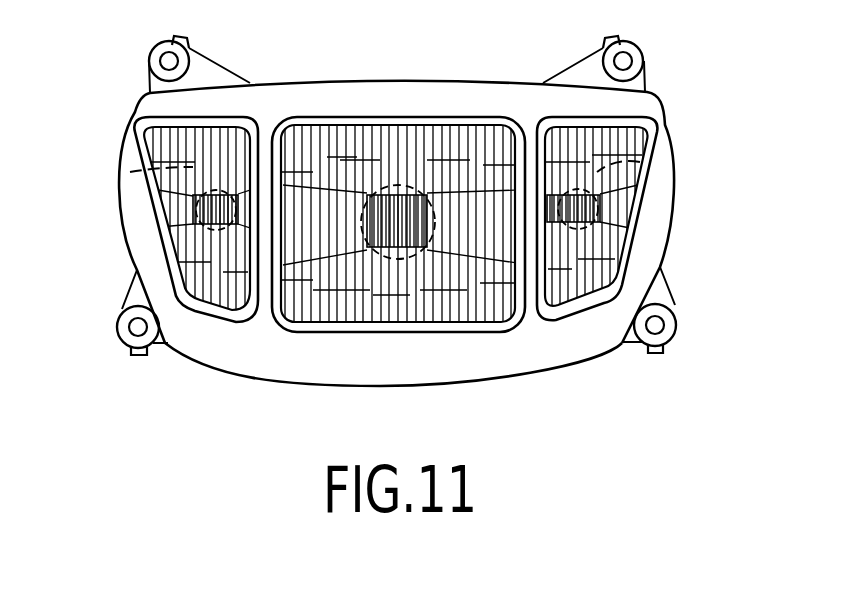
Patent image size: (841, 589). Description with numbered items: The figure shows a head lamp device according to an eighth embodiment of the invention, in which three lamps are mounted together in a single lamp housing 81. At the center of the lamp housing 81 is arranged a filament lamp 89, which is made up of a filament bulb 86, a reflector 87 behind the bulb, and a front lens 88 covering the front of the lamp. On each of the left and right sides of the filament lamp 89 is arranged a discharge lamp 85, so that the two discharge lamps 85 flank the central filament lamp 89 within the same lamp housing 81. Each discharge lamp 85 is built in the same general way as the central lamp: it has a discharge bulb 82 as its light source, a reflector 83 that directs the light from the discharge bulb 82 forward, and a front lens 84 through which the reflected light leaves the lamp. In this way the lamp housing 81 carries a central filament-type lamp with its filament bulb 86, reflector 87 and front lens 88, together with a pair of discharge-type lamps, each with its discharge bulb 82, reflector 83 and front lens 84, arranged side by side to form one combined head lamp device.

The lamp housing 81 is at (310, 82).
The discharge bulb 82 is at (130, 172).
The reflector 83 is at (196, 218).
The front lens 84 is at (200, 249).
The discharge lamp 85 is at (231, 360).
The filament bulb 86 is at (413, 180).
The reflector 87 is at (452, 220).
The front lens 88 is at (478, 175).
The filament lamp 89 is at (407, 365).